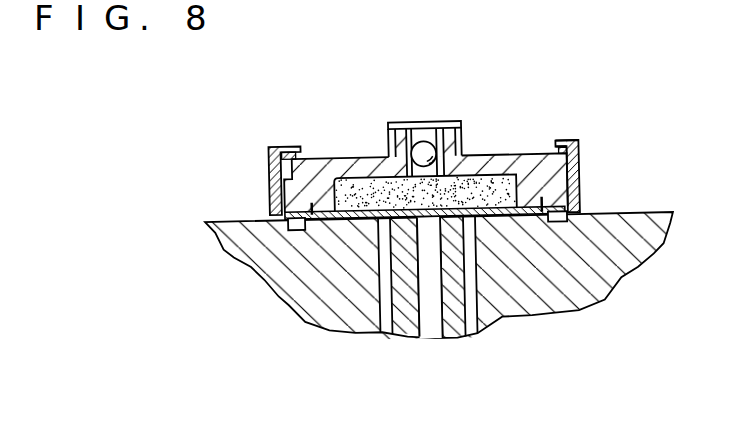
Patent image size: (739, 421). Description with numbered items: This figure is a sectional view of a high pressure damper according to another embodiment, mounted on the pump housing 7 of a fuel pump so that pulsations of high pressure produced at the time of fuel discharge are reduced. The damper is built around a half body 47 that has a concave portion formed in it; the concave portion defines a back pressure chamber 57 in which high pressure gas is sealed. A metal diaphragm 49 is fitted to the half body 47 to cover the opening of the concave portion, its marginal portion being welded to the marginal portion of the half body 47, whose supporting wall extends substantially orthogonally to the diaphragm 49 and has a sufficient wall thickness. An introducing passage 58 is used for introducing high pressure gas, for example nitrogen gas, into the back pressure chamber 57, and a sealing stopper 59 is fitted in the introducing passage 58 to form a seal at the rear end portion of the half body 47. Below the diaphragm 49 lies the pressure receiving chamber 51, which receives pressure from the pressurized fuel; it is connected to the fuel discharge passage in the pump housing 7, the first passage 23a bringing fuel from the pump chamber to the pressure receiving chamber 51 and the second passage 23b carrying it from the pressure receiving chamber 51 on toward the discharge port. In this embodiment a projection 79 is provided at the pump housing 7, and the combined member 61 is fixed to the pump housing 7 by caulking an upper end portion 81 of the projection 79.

The pump housing 7 is at (277, 258).
The first passage 23a is at (433, 307).
The second passage 23b is at (385, 319).
The half body 47 is at (337, 156).
The diaphragm 49 is at (357, 226).
The pressure receiving chamber 51 is at (402, 219).
The back pressure chamber 57 is at (468, 190).
The introducing passage 58 is at (419, 121).
The sealing stopper 59 is at (428, 141).
The combined member 61 is at (318, 155).
The projection 79 is at (582, 183).
The upper end portion 81 is at (558, 142).